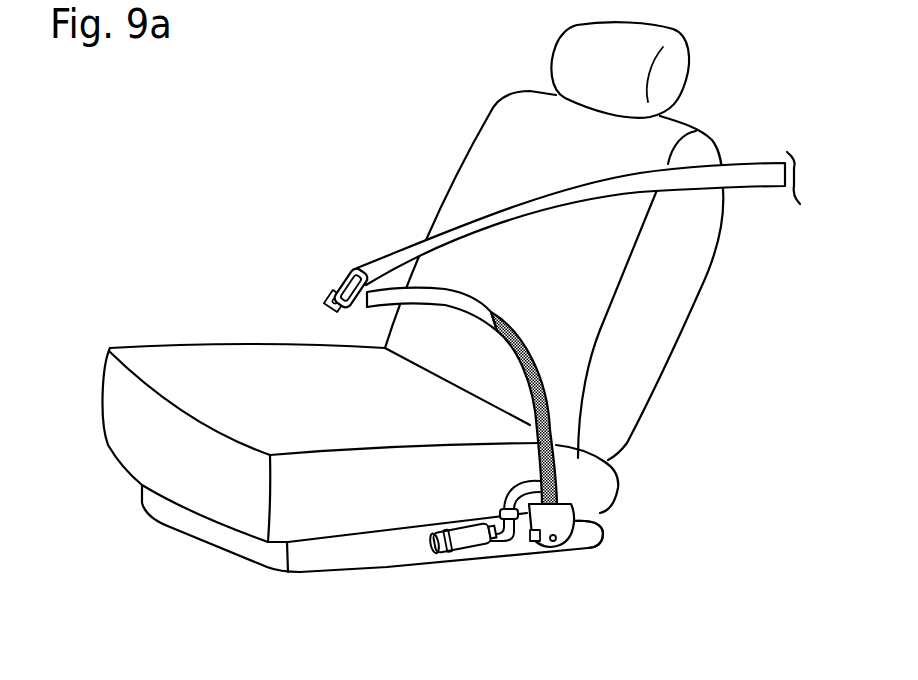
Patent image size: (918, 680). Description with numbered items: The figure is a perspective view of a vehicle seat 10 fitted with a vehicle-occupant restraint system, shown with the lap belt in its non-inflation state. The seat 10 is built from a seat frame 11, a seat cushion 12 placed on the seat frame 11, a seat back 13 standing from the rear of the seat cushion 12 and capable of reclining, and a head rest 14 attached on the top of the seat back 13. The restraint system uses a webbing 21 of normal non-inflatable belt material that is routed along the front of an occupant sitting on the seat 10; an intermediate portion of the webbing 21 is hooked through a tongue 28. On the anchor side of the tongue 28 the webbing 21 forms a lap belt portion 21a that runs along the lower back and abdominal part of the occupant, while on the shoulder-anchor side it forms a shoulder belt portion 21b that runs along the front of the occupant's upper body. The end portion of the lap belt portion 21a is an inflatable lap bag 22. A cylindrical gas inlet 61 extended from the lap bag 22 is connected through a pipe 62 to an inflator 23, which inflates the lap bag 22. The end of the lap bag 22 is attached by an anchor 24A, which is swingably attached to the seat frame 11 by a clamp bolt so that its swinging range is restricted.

The seat 10 is at (476, 78).
The seat frame 11 is at (323, 557).
The seat cushion 12 is at (190, 468).
The seat back 13 is at (490, 127).
The head rest 14 is at (583, 42).
The webbing 21 is at (458, 345).
The lap belt portion 21a is at (465, 310).
The shoulder belt portion 21b is at (513, 203).
The lap bag 22 is at (520, 378).
The inflator 23 is at (430, 550).
The anchor 24A is at (600, 528).
The tongue 28 is at (343, 281).
The gas inlet 61 is at (513, 483).
The pipe 62 is at (520, 533).